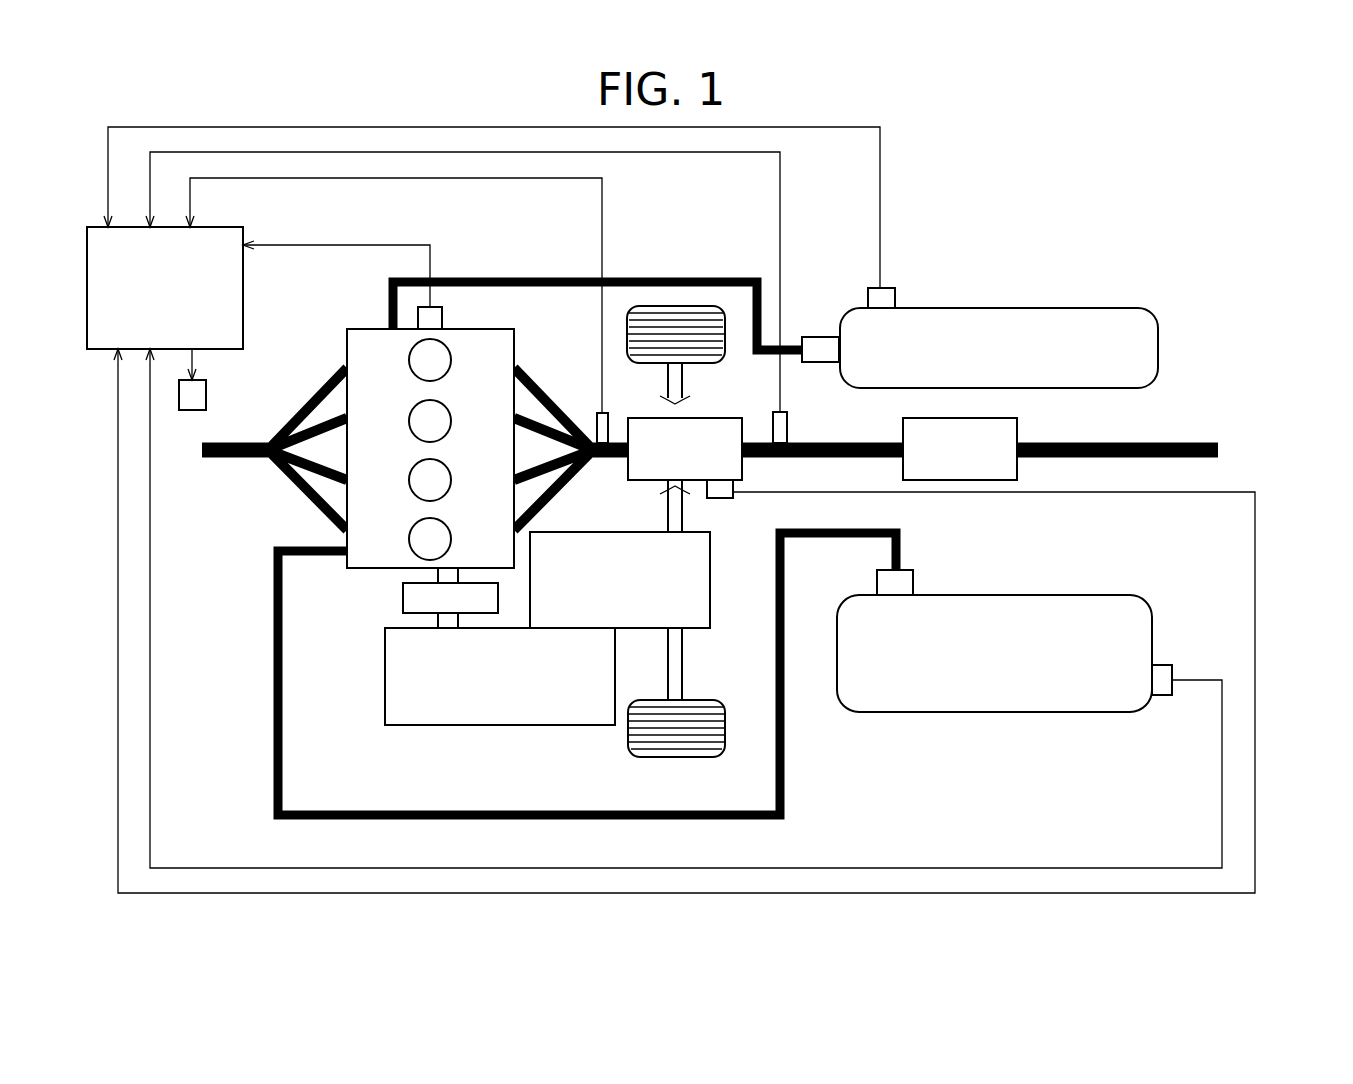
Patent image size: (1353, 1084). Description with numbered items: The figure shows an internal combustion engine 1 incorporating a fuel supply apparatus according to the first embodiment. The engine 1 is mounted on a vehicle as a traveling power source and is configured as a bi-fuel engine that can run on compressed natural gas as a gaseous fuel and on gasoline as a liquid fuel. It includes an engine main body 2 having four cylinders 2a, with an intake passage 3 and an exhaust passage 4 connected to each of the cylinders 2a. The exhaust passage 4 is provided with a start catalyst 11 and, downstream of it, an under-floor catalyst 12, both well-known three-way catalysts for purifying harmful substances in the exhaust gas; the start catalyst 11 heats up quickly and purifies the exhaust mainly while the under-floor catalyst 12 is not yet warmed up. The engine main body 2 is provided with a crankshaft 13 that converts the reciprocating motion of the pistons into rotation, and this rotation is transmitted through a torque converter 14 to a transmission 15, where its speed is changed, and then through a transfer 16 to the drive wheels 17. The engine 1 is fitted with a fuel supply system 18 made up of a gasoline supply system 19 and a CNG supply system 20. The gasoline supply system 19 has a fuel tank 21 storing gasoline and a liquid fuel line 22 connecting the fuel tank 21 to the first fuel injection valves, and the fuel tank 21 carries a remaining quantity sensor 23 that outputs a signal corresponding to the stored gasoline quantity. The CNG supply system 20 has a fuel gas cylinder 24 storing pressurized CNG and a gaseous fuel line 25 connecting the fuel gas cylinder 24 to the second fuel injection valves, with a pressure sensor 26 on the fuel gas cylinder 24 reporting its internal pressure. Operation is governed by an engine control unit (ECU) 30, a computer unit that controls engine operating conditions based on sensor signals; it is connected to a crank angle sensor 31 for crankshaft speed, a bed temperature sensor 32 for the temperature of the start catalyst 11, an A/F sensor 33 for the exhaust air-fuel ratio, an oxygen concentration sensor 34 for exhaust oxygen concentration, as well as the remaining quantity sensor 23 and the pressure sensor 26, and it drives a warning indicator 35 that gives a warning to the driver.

The internal combustion engine 1 is at (1235, 170).
The engine main body 2 is at (430, 413).
The cylinders 2a is at (443, 368).
The intake passage 3 is at (243, 458).
The exhaust passage 4 is at (867, 442).
The start catalyst 11 is at (730, 418).
The under-floor catalyst 12 is at (1017, 428).
The crankshaft 13 is at (438, 575).
The torque converter 14 is at (403, 600).
The transmission 15 is at (468, 725).
The transfer 16 is at (642, 617).
The drive wheels 17 is at (643, 363).
The fuel supply system 18 is at (980, 284).
The gasoline supply system 19 is at (998, 709).
The CNG supply system 20 is at (737, 263).
The fuel tank 21 is at (1028, 712).
The liquid fuel line 22 is at (565, 813).
The remaining quantity sensor 23 is at (1157, 697).
The fuel gas cylinder 24 is at (1015, 308).
The gaseous fuel line 25 is at (657, 278).
The pressure sensor 26 is at (895, 297).
The engine control unit (ECU) 30 is at (243, 298).
The crank angle sensor 31 is at (442, 318).
The bed temperature sensor 32 is at (720, 500).
The A/F sensor 33 is at (597, 420).
The oxygen concentration sensor 34 is at (787, 420).
The warning indicator 35 is at (206, 395).